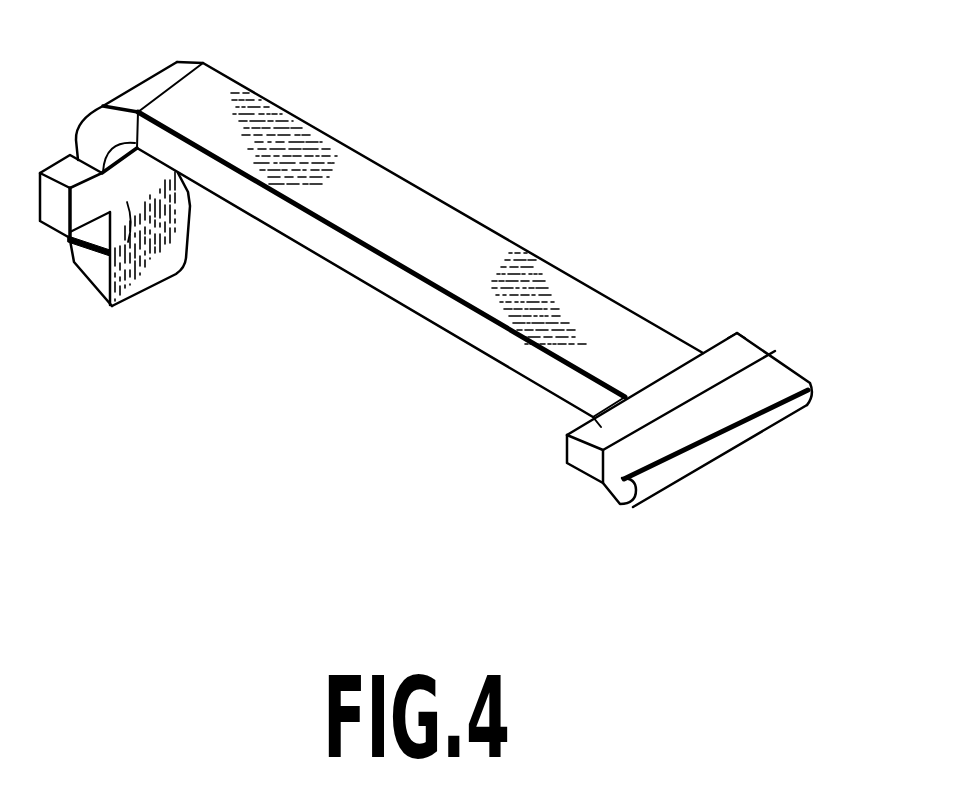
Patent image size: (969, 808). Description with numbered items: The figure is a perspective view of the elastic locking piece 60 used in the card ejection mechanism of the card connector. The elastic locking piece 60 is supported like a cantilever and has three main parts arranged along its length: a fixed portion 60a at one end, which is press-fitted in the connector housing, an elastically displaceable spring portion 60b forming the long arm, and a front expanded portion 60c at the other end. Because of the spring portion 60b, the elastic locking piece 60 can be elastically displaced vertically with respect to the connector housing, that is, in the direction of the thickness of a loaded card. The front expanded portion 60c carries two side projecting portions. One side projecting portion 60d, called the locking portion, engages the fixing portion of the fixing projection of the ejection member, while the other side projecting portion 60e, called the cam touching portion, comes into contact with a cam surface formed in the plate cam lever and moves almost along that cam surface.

The elastic locking piece 60 is at (462, 243).
The fixed portion 60a is at (97, 297).
The spring portion 60b is at (323, 210).
The front expanded portion 60c is at (687, 423).
The side projecting portion (locking portion) 60d is at (593, 417).
The side projecting portion (cam touching portion) 60e is at (737, 330).